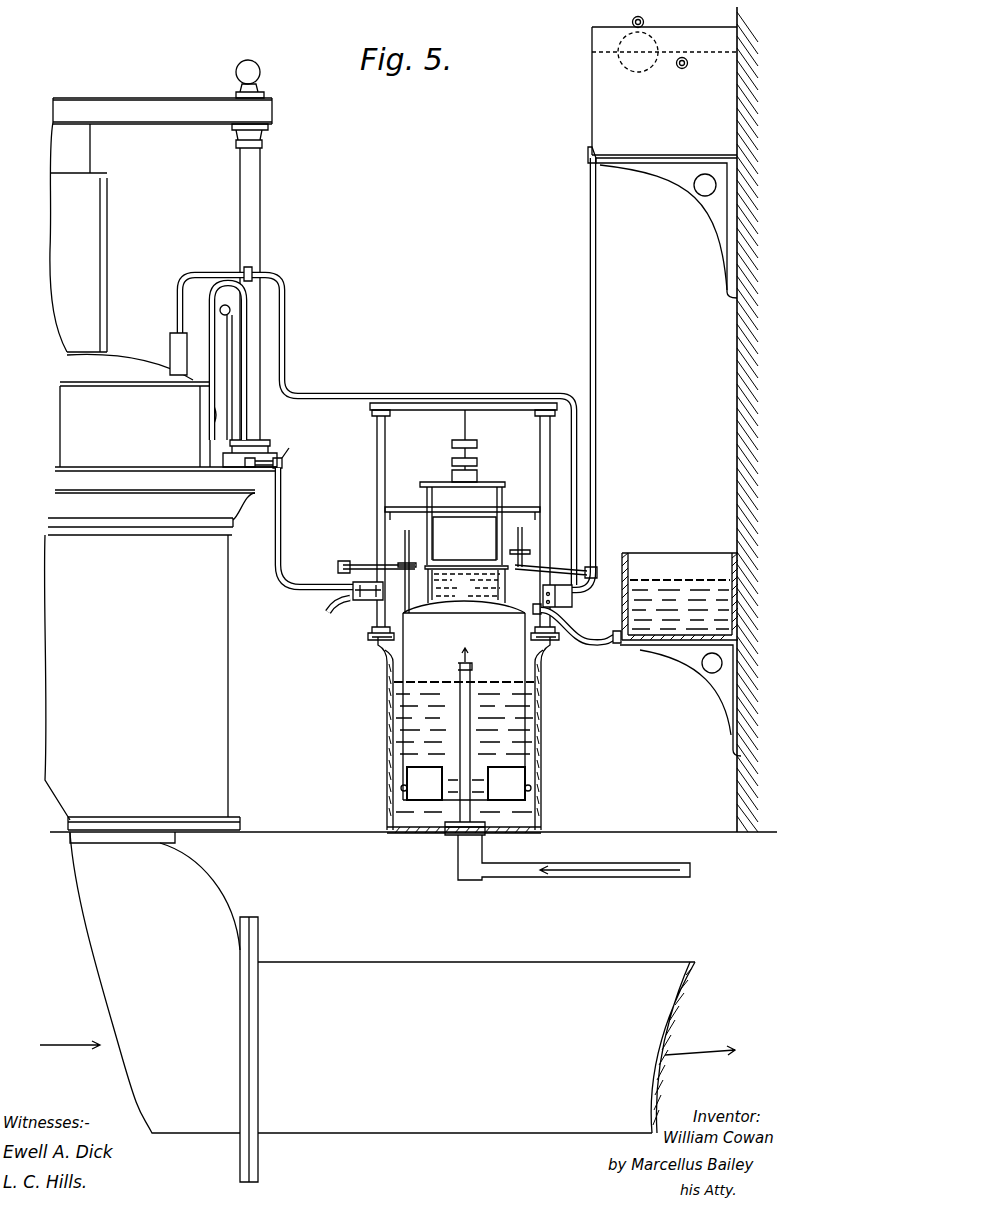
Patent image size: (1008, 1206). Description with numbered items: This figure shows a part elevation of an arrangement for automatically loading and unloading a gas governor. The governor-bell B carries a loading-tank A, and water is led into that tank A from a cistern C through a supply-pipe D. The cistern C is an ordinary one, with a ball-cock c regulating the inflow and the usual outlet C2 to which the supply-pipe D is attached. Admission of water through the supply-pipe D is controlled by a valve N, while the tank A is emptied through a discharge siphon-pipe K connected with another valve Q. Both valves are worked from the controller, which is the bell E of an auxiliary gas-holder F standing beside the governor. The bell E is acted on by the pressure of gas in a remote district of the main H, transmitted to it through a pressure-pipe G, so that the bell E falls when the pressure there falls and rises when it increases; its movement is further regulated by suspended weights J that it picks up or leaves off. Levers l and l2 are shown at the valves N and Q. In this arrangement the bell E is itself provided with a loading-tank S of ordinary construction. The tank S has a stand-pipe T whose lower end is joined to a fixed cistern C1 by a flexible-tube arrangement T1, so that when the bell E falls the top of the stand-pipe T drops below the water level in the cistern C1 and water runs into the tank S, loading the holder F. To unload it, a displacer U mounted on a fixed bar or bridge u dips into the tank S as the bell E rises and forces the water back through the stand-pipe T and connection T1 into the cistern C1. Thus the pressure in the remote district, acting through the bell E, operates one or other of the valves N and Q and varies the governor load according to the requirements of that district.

The tank A is at (161, 242).
The governor-bell B is at (161, 759).
The cistern C is at (675, 419).
The ball-cock c is at (648, 19).
The outlet C2 is at (599, 158).
The cistern C1 is at (663, 583).
The supply-pipe D is at (285, 378).
The bell E is at (486, 616).
The auxiliary gas-holder F is at (533, 737).
The pipe G is at (587, 860).
The main H is at (387, 1049).
The suspended weights J is at (468, 475).
The siphon-pipe K is at (247, 431).
The valve N is at (568, 600).
The valve Q is at (366, 600).
The loading-tank S is at (455, 600).
The stand-pipe T is at (500, 604).
The flexible-tube arrangement T1 is at (578, 641).
The displacer U is at (462, 523).
The fixed bar or bridge u is at (463, 513).
The lever l is at (356, 563).
The lever l2 is at (557, 565).